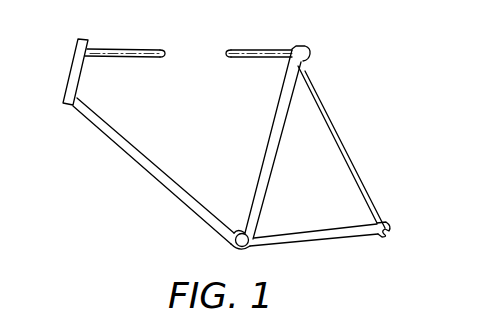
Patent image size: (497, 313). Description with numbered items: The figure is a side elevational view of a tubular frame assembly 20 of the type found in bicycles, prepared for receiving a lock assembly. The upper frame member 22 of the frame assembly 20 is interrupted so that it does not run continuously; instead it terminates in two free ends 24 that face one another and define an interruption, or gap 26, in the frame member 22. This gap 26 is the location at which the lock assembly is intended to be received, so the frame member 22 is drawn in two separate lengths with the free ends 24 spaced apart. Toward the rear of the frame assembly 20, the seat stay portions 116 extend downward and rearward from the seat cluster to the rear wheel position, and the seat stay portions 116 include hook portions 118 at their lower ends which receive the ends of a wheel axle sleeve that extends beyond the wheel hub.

The tubular frame assembly 20 is at (338, 35).
The frame member 22 is at (125, 48).
The free ends 24 is at (225, 52).
The gap 26 is at (202, 34).
The seat stay portions 116 is at (342, 142).
The hook portions 118 is at (387, 225).